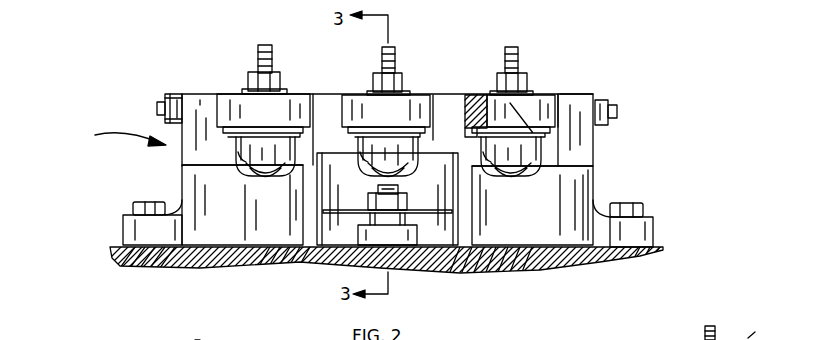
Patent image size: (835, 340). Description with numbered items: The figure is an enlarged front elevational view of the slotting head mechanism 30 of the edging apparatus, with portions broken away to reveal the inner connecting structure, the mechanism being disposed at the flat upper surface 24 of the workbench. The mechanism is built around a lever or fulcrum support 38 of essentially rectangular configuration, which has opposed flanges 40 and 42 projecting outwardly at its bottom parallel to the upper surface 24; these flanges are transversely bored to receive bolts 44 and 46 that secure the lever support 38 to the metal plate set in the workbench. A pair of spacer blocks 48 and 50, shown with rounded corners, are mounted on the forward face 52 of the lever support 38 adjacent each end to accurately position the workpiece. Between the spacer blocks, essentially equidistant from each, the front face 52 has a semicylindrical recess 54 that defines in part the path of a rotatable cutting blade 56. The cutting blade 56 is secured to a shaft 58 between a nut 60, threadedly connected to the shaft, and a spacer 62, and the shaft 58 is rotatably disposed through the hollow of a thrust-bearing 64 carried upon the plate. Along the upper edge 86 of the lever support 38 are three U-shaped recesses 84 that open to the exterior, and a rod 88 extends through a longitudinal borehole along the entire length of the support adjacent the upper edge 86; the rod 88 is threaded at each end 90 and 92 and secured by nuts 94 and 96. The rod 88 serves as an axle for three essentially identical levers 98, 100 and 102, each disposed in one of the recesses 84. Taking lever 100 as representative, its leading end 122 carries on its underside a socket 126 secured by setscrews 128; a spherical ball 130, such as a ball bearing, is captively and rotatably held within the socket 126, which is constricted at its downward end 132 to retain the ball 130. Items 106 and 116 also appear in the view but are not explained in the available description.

The upper surface 24 is at (567, 260).
The slotting head mechanism 30 is at (113, 135).
The lever support 38 is at (593, 160).
The flange 40 is at (643, 230).
The flange 42 is at (135, 228).
The bolt 44 is at (645, 207).
The bolt 46 is at (147, 207).
The spacer block 48 is at (580, 193).
The spacer block 50 is at (198, 185).
The forward face 52 is at (583, 137).
The semicylindrical recess 54 is at (338, 155).
The cutting blade 56 is at (443, 235).
The shaft 58 is at (405, 186).
The nut 60 is at (368, 198).
The spacer 62 is at (368, 222).
The thrust-bearing 64 is at (373, 242).
The U-shaped recess 84 is at (308, 96).
The upper edge 86 is at (585, 95).
The rod 88 is at (162, 100).
The threaded end 90 is at (617, 110).
The threaded end 92 is at (157, 108).
The nut 94 is at (610, 100).
The nut 96 is at (176, 98).
The lever 98 is at (533, 107).
The lever 100 is at (415, 110).
The lever 102 is at (237, 108).
The leader item 106 is at (748, 338).
The small fastener 116 is at (705, 332).
The leading end 122 is at (199, 333).
The socket 126 is at (273, 147).
The setscrew 128 is at (295, 100).
The spherical ball 130 is at (257, 167).
The downward end 132 is at (240, 158).